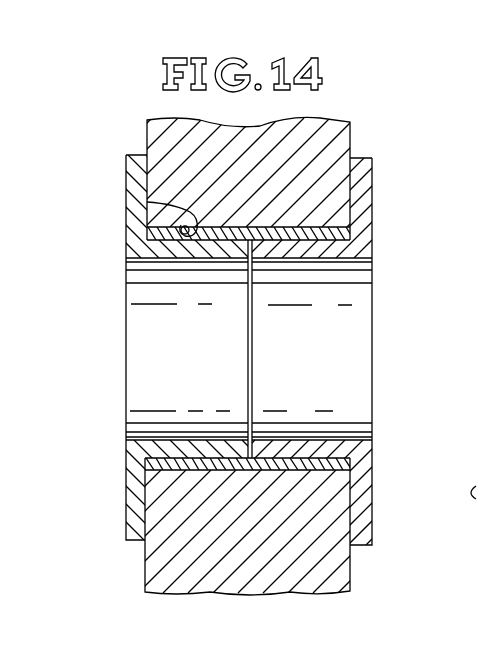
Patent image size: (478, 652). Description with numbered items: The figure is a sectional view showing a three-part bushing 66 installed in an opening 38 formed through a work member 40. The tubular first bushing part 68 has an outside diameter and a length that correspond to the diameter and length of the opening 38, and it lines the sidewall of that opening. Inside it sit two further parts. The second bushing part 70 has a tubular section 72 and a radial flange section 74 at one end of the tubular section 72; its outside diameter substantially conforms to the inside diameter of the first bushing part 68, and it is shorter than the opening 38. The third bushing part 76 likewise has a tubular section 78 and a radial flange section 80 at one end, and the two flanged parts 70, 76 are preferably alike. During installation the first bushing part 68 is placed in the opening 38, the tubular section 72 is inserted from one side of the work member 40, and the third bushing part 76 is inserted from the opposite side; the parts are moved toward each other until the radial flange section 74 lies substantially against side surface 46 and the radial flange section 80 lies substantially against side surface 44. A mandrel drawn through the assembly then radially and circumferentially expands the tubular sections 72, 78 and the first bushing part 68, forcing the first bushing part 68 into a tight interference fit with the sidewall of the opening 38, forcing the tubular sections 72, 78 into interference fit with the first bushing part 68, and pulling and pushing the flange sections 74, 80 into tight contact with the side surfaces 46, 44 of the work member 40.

The work member 40 is at (328, 138).
The side surface 44 is at (350, 563).
The side surface 46 is at (143, 569).
The opening 38 is at (147, 202).
The bushing 66 is at (113, 389).
The first bushing part 68 is at (208, 468).
The second bushing part 70 is at (108, 295).
The tubular section 72 is at (152, 247).
The radial flange section 74 is at (127, 178).
The third bushing part 76 is at (387, 372).
The tubular section 78 is at (290, 248).
The radial flange section 80 is at (360, 190).